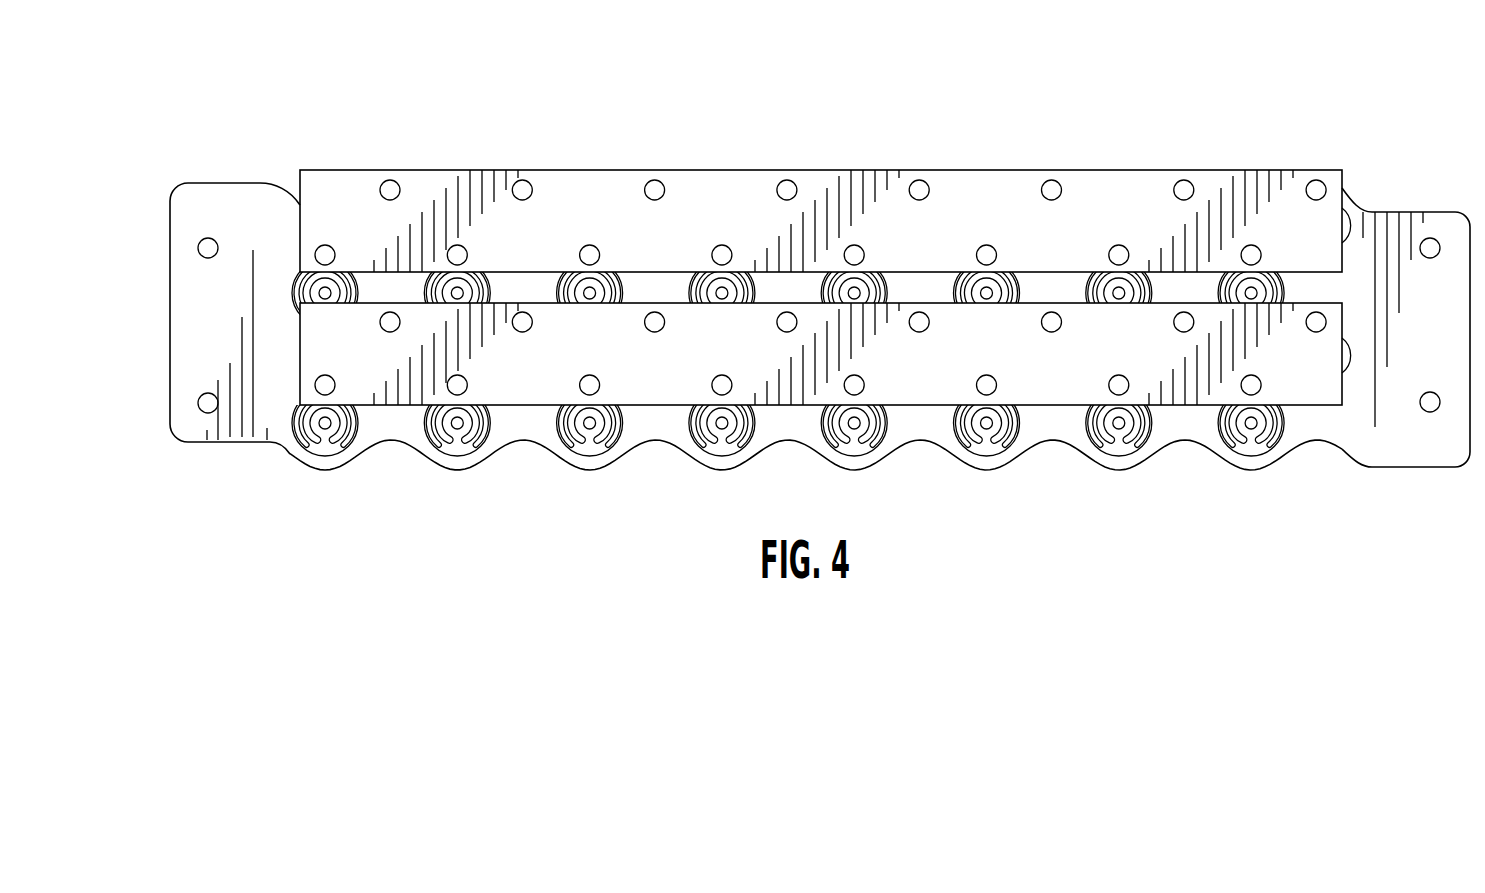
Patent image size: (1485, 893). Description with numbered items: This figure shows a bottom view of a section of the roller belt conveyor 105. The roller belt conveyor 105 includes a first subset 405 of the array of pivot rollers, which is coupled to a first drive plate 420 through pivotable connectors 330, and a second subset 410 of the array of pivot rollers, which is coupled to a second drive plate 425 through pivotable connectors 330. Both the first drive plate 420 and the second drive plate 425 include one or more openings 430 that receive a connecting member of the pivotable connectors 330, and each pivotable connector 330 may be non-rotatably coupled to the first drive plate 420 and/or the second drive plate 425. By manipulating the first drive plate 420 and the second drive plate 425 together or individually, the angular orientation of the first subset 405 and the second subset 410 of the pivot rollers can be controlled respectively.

The roller belt conveyor 105 is at (785, 284).
The pivotable connectors 330 is at (293, 425).
The first subset of the array of pivot rollers 405 is at (821, 240).
The first drive plate 420 is at (460, 170).
The second drive plate 425 is at (411, 380).
The openings 430 is at (665, 170).
The second subset of the array of pivot rollers 410 is at (1030, 441).